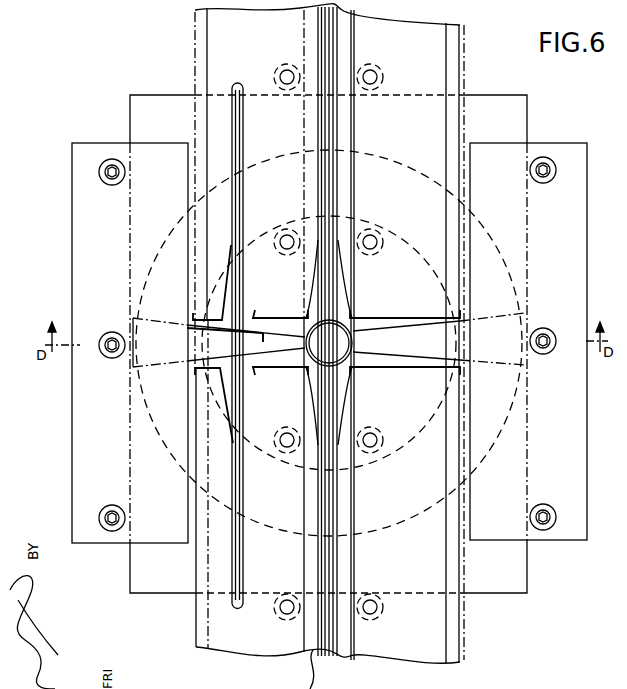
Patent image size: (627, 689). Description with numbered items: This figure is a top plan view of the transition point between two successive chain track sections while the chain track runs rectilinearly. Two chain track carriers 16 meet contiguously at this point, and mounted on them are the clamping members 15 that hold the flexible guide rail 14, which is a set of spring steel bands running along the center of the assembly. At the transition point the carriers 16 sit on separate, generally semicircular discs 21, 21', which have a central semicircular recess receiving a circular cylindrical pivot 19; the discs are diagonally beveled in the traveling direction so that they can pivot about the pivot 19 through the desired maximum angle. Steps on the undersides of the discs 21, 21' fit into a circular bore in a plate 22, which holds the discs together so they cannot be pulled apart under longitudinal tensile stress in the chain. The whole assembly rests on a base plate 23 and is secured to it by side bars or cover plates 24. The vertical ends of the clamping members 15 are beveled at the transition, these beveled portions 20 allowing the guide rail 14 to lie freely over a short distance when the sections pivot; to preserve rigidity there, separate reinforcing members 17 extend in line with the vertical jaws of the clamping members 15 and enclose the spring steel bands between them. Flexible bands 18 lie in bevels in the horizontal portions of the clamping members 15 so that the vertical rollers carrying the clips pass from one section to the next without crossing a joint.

The flexible guide rail 14 is at (354, 35).
The clamping member 15 is at (303, 44).
The chain track carrier 16 is at (206, 44).
The reinforcing member 17 is at (354, 114).
The flexible band 18 is at (232, 107).
The pivot 19 is at (355, 328).
The beveled portion 20 is at (313, 300).
The semicircular disc 21 is at (193, 282).
The semicircular disc 21' is at (193, 405).
The plate 22 is at (200, 347).
The base plate 23 is at (138, 121).
The side bar 24 is at (90, 187).